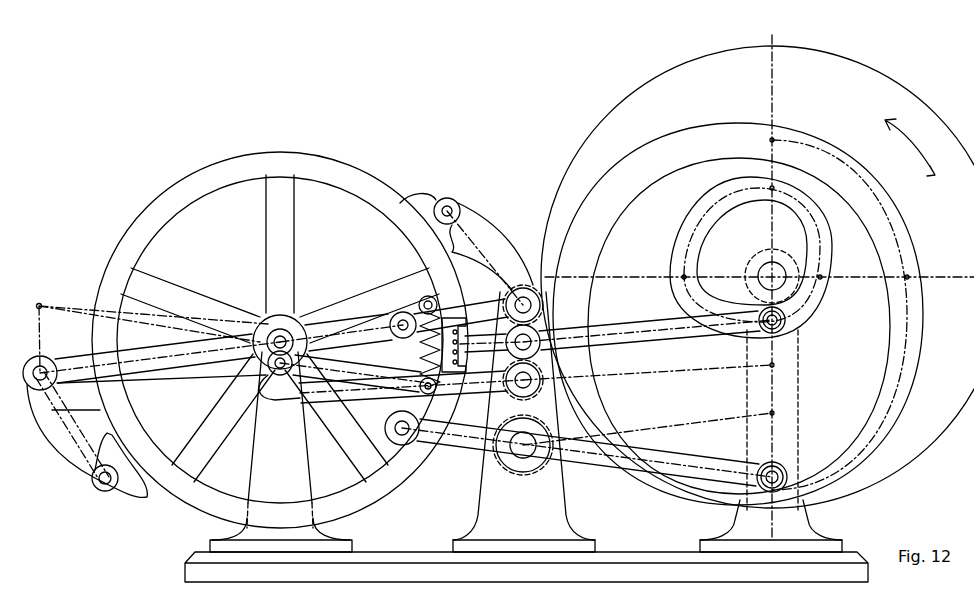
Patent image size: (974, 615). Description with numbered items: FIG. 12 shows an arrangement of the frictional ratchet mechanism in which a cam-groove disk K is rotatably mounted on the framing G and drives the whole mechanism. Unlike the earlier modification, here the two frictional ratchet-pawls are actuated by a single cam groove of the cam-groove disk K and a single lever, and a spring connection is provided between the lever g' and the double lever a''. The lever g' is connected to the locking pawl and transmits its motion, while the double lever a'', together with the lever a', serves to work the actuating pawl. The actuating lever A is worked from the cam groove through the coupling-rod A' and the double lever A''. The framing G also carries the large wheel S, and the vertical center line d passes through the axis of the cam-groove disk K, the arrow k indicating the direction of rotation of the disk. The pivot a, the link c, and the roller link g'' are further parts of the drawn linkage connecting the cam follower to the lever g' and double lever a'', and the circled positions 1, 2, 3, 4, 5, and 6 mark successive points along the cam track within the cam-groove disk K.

The fly-wheel S is at (296, 166).
The framing G is at (526, 437).
The cam-groove disk K is at (757, 277).
The centre line / axis d is at (768, 277).
The direction of rotation k is at (755, 266).
The roller pivot a is at (772, 489).
The actuating lever A is at (348, 331).
The coupling-rod A' is at (246, 377).
The double lever A'' is at (578, 453).
The lever a' is at (151, 347).
The double lever a'' is at (275, 434).
The link rod c is at (622, 331).
The lever g' is at (455, 341).
The roller link g'' is at (466, 263).
The position 1 is at (637, 163).
The position 2 is at (685, 295).
The position 3 is at (131, 519).
The position 4 is at (818, 240).
The position 5 is at (805, 200).
The position 6 is at (830, 348).